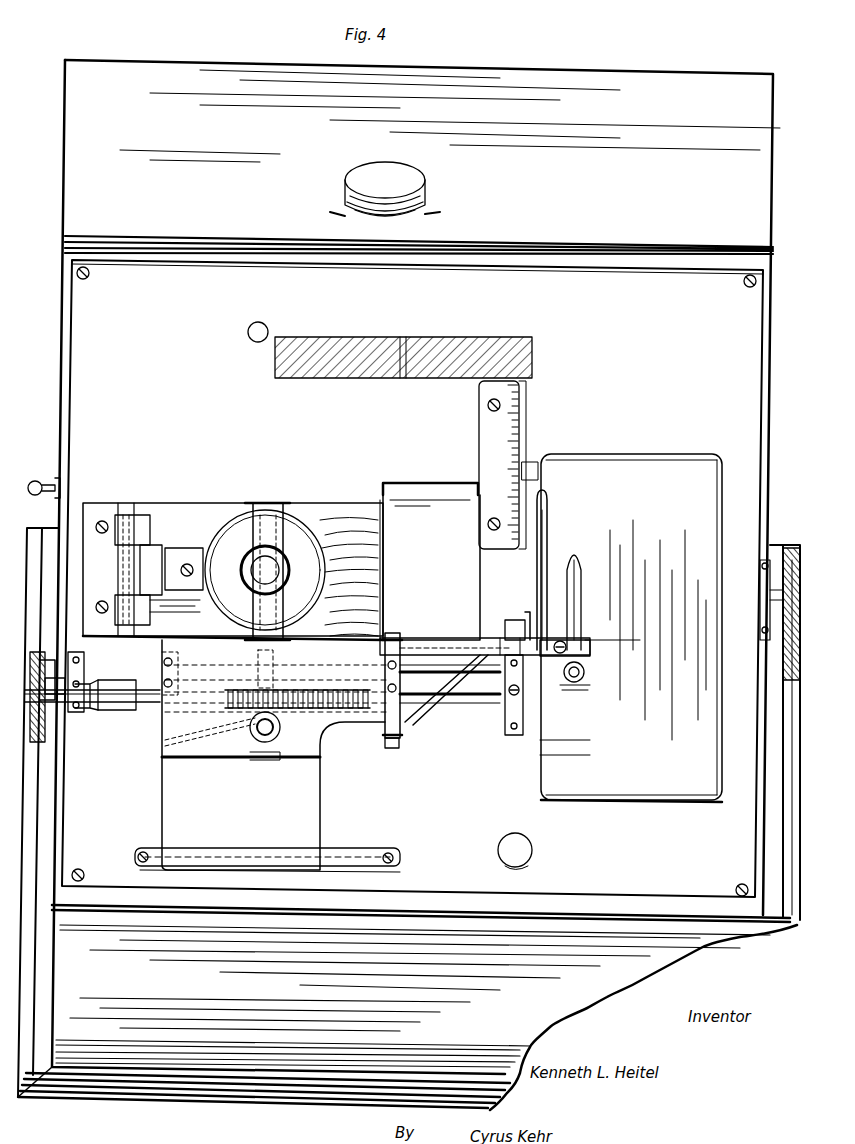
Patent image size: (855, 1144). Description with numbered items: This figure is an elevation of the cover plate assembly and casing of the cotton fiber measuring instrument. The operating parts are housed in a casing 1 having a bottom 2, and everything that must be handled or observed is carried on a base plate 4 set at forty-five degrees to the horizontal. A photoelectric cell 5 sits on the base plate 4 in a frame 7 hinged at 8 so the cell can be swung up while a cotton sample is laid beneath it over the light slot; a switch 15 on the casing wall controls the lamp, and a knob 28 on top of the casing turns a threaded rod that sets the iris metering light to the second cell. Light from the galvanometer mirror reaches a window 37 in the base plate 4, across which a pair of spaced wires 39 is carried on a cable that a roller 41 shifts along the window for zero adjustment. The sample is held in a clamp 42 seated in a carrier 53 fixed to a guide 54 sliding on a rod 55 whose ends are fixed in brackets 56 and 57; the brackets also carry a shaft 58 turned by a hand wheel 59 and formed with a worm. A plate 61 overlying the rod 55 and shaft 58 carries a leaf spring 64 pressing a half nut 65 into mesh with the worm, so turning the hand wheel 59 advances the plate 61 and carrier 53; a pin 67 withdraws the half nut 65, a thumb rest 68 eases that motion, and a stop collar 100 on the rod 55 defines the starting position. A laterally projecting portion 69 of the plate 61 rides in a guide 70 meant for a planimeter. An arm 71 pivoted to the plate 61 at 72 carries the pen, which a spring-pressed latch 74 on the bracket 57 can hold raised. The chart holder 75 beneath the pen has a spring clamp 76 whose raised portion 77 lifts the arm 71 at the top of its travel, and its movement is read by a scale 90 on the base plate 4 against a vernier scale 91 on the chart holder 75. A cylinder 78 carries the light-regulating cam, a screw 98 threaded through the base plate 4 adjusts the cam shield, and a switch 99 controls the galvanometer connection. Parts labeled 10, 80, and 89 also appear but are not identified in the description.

The casing 1 is at (678, 82).
The bottom 2 is at (152, 1090).
The base plate 4 is at (92, 397).
The photoelectric cell 5 is at (300, 590).
The frame 7 is at (252, 535).
The hinge 8 is at (120, 528).
The grained block 10 is at (345, 530).
The switch 15 is at (50, 630).
The knob 28 is at (408, 188).
The window 37 is at (500, 348).
The wires 39 is at (405, 350).
The roller 41 is at (248, 331).
The sample holder or clamp 42 is at (383, 510).
The carrier 53 is at (420, 484).
The guide 54 is at (340, 640).
The rod 55 is at (450, 690).
The bracket 56 is at (78, 715).
The bracket 57 is at (512, 722).
The shaft 58 is at (465, 705).
The hand wheel 59 is at (40, 742).
The plate 61 is at (165, 738).
The leaf spring 64 is at (200, 737).
The half nut 65 is at (250, 730).
The pin 67 is at (280, 730).
The thumb rest 68 is at (272, 760).
The laterally projecting portion 69 is at (165, 822).
The guide 70 is at (355, 857).
The arm 71 is at (435, 640).
The pivot 72 is at (398, 742).
The spring-pressed latch 74 is at (512, 618).
The chart holder 75 is at (660, 765).
The spring clamp 76 is at (549, 520).
The raised portion 77 is at (550, 752).
The cylinder 78 is at (585, 622).
The plate 80 is at (652, 460).
The rack bar 89 is at (781, 638).
The scale 90 is at (522, 444).
The vernier scale 91 is at (540, 470).
The screw 98 is at (532, 852).
The switch 99 is at (40, 480).
The stop collar 100 is at (118, 690).